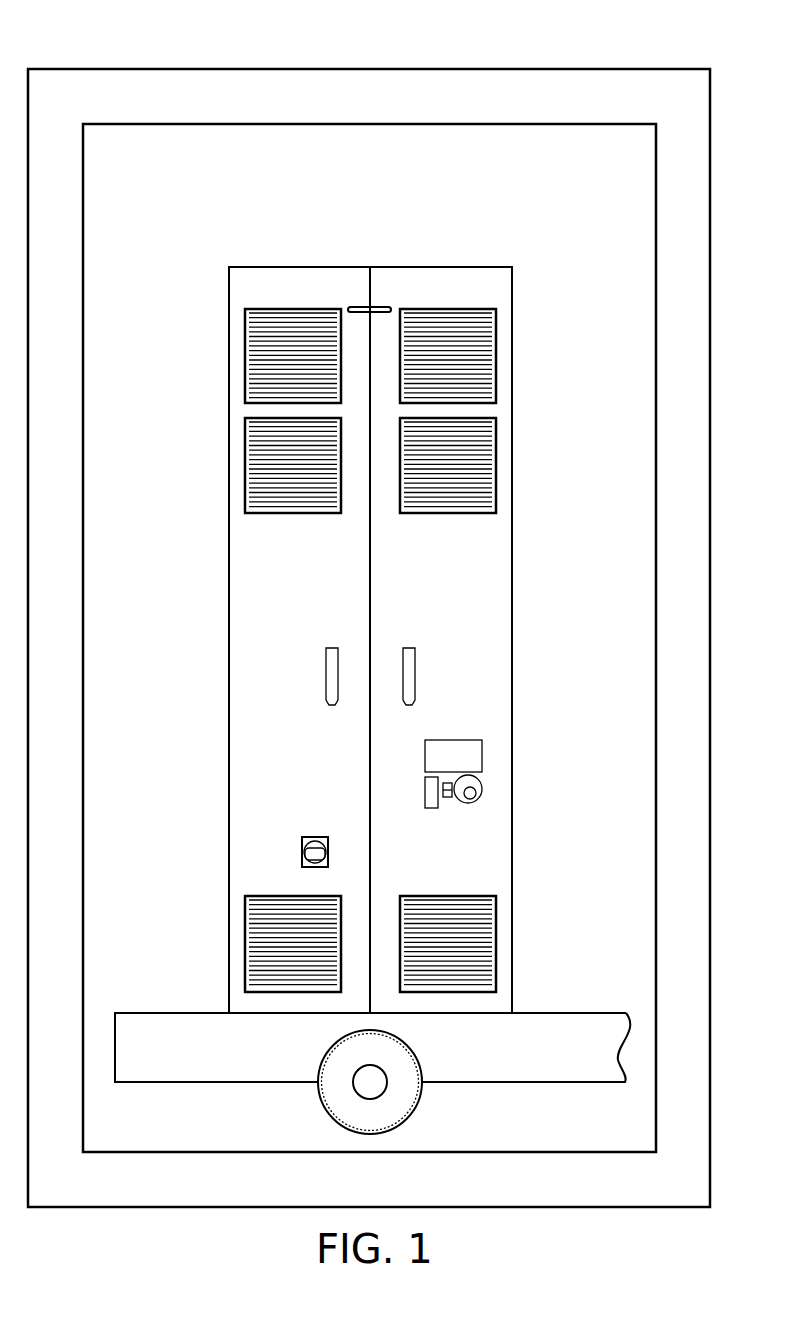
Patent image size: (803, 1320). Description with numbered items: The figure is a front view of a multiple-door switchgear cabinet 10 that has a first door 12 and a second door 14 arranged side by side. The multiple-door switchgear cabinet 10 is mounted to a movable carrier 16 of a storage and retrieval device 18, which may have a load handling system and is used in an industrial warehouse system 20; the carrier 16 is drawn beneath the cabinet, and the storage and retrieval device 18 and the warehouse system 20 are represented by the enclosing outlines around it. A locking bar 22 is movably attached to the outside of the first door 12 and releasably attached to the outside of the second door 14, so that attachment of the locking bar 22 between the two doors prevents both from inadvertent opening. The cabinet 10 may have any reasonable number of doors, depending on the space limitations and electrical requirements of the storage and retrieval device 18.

The multiple-door switchgear cabinet 10 is at (192, 250).
The first door 12 is at (237, 633).
The second door 14 is at (489, 661).
The movable carrier 16 is at (608, 1046).
The storage and retrieval device 18 is at (187, 124).
The industrial warehouse system 20 is at (712, 92).
The locking bar 22 is at (392, 309).